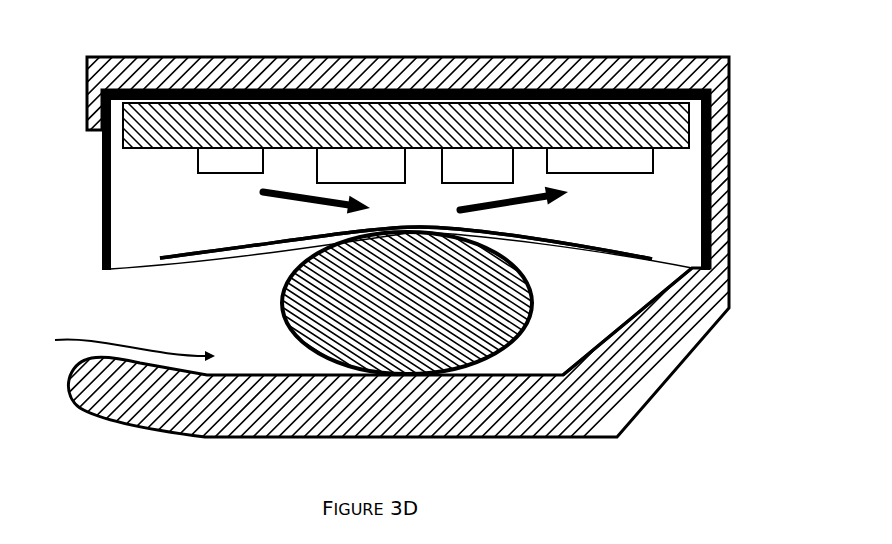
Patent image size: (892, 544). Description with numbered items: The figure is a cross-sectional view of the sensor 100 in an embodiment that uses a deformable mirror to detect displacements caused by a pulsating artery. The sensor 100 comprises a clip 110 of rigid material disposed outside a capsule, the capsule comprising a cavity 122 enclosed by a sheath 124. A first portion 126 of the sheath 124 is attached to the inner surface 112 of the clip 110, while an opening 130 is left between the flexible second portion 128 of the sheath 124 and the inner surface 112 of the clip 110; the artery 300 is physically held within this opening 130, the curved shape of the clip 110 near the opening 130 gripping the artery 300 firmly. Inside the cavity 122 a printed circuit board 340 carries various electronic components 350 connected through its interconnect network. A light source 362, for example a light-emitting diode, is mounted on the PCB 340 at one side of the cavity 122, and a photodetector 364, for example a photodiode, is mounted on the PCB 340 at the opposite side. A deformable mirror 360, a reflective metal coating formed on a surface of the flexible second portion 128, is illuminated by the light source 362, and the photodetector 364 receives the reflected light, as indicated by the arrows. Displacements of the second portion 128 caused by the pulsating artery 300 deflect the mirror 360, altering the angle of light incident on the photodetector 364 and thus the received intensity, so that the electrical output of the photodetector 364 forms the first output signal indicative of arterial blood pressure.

The sensor 100 is at (446, 272).
The clip 110 is at (294, 86).
The inner surface of the clip 112 is at (640, 309).
The cavity 122 is at (122, 212).
The sheath 124 is at (353, 275).
The first portion of the sheath 126 is at (100, 256).
The second portion of the sheath 128 is at (138, 268).
The opening 130 is at (115, 344).
The artery 300 is at (284, 311).
The printed circuit board 340 is at (294, 136).
The electronic components 350 is at (499, 170).
The deformable mirror 360 is at (230, 247).
The light source 362 is at (198, 158).
The photodetector 364 is at (642, 173).